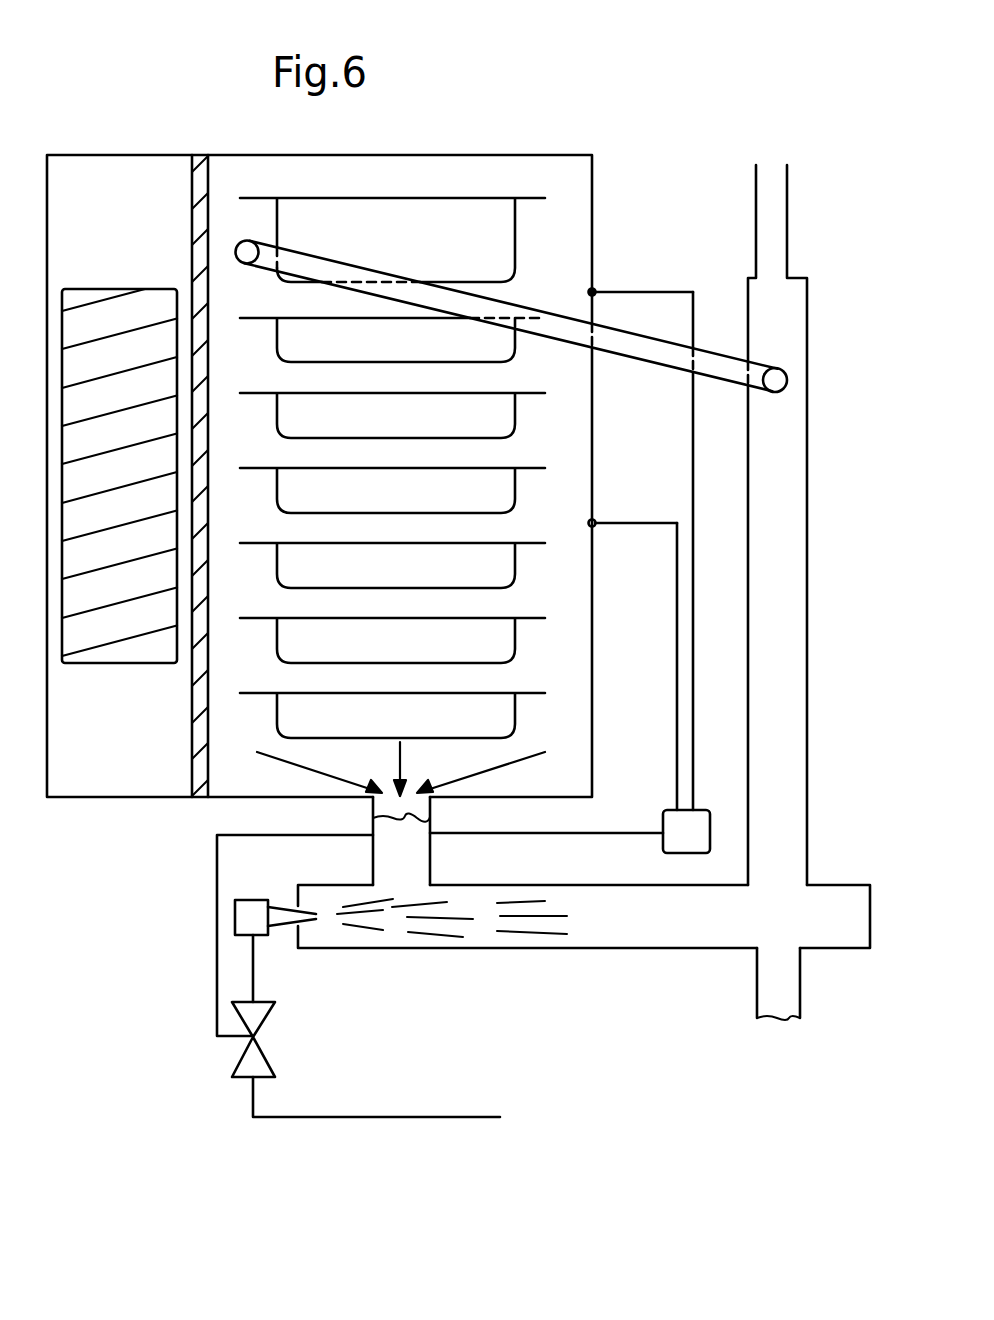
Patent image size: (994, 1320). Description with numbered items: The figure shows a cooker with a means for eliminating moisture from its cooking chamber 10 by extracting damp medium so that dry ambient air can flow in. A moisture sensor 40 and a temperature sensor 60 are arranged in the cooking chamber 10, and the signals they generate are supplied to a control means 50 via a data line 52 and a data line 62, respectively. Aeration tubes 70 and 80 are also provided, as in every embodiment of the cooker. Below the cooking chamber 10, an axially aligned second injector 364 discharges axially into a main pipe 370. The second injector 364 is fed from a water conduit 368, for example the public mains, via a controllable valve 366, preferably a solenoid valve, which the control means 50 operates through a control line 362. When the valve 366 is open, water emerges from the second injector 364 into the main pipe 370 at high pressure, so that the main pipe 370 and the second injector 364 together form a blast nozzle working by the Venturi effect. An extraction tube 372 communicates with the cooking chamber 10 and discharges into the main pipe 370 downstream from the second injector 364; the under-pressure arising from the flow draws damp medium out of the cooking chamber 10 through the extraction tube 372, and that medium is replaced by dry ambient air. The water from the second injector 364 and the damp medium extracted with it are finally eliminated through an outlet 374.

The cooking chamber 10 is at (567, 663).
The moisture sensor 40 is at (594, 518).
The control means 50 is at (697, 823).
The data line 52 is at (694, 638).
The temperature sensor 60 is at (594, 292).
The data line 62 is at (678, 717).
The aeration tube 70 is at (637, 362).
The aeration tube 80 is at (806, 465).
The control line 362 is at (565, 835).
The second injector 364 is at (250, 915).
The controllable valve 366 is at (255, 1013).
The water conduit 368 is at (342, 1117).
The main pipe 370 is at (652, 948).
The extraction tube 372 is at (373, 857).
The outlet 374 is at (801, 998).